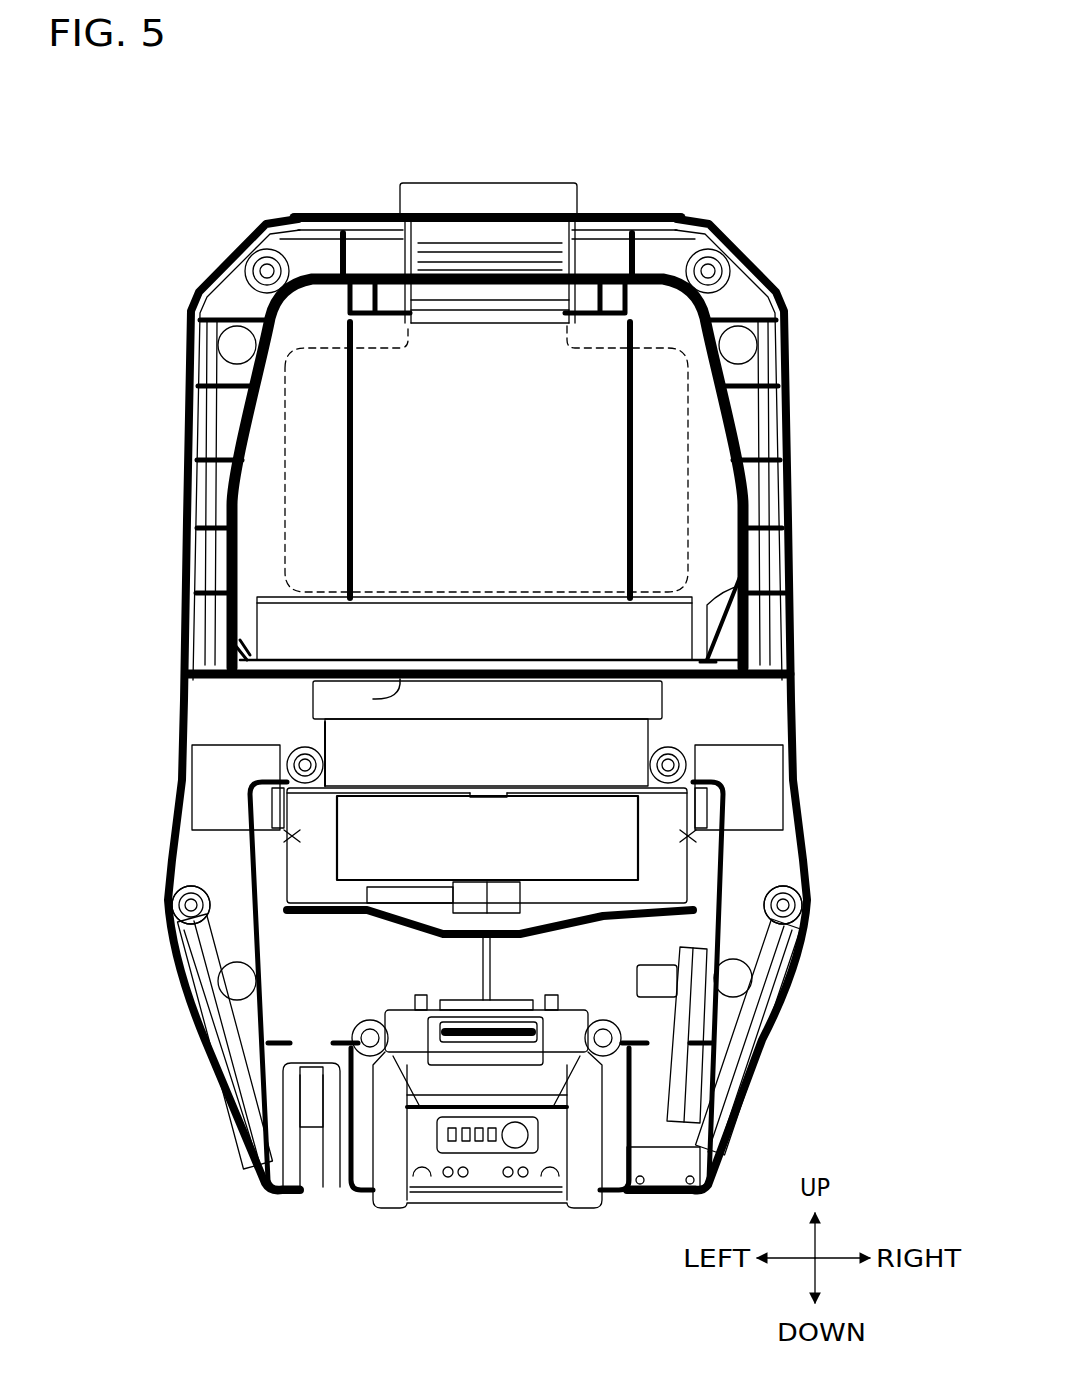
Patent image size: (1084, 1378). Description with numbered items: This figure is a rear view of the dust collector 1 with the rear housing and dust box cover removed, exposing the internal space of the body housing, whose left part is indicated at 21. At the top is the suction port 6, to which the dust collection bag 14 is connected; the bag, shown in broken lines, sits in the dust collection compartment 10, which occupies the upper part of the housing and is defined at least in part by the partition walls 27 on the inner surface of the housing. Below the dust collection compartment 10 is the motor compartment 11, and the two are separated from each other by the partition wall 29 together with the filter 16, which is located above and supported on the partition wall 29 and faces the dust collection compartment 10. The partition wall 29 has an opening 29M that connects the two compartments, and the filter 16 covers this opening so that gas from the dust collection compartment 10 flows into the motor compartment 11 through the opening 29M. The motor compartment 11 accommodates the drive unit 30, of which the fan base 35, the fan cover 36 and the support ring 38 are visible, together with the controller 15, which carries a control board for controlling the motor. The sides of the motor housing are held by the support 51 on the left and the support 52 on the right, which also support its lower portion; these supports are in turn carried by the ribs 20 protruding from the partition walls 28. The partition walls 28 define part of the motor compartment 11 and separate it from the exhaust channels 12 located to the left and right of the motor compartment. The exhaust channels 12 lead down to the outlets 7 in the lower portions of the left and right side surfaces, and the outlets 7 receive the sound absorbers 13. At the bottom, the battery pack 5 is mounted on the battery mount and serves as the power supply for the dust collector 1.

The dust collector 1 is at (745, 198).
The battery pack 5 is at (486, 1211).
The suction port 6 is at (487, 183).
The outlets 7 is at (220, 1073).
The dust collection compartment 10 is at (262, 424).
The motor compartment 11 is at (292, 946).
The exhaust channels 12 is at (760, 866).
The sound absorbers 13 is at (216, 1006).
The dust collection bag 14 is at (695, 343).
The controller 15 is at (757, 1070).
The filter 16 is at (708, 612).
The ribs 20 is at (713, 776).
The left housing 21 is at (790, 348).
The partition walls 27 is at (235, 468).
The partition walls 28 is at (735, 850).
The partition wall 29 is at (725, 688).
The opening 29M is at (400, 679).
The drive unit 30 is at (322, 737).
The fan base 35 is at (645, 826).
The fan cover 36 is at (672, 738).
The support ring 38 is at (665, 712).
The support 51 is at (338, 878).
The support 52 is at (657, 876).